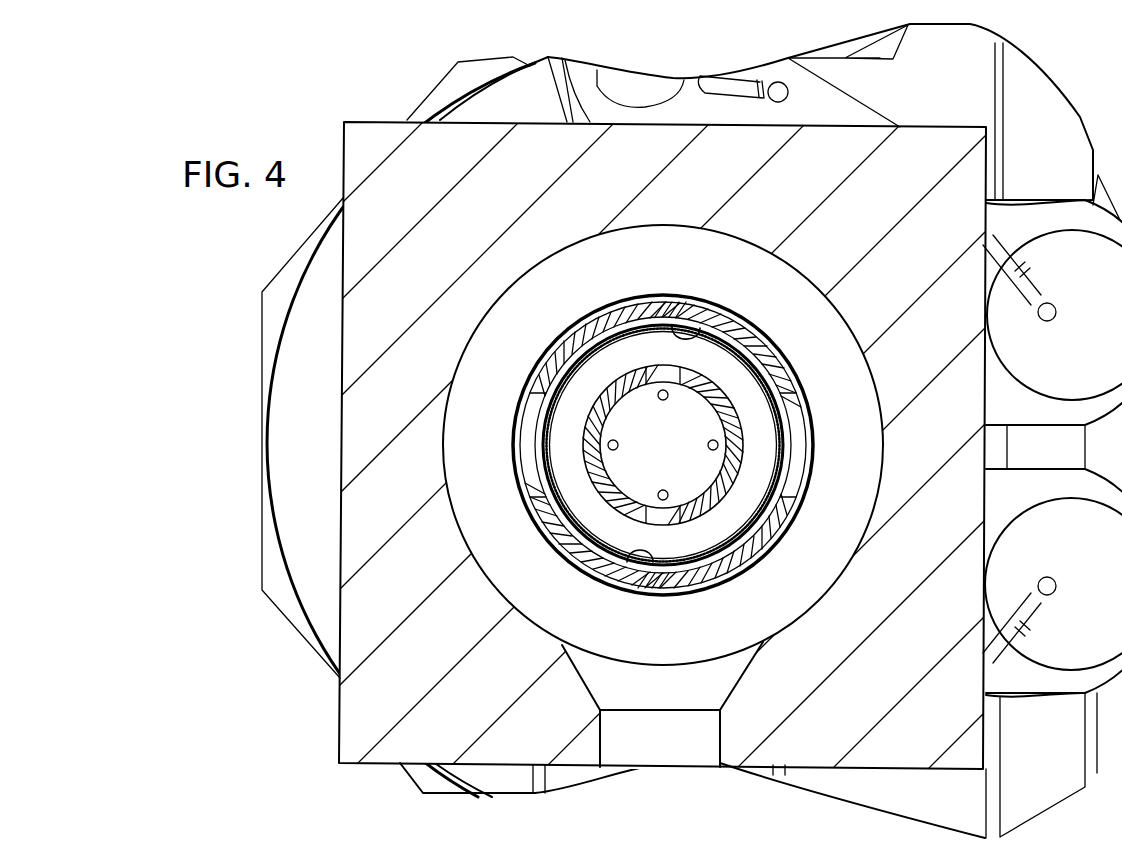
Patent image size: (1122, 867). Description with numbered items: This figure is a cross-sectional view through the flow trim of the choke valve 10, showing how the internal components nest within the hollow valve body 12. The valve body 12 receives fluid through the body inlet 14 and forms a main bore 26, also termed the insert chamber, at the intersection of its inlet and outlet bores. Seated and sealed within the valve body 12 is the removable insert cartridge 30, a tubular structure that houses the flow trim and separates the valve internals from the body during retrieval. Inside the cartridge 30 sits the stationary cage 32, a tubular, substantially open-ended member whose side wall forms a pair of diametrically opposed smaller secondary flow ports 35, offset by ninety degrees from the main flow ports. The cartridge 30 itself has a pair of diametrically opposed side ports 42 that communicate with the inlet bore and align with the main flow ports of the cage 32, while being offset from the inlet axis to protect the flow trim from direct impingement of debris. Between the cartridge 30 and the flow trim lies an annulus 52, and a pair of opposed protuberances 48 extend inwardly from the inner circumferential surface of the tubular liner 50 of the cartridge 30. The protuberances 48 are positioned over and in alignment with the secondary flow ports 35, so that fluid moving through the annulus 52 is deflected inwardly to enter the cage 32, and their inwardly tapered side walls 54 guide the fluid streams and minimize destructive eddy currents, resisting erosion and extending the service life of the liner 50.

The choke valve 10 is at (398, 83).
The hollow valve body 12 is at (865, 124).
The body inlet 14 is at (627, 688).
The main bore 26 is at (600, 288).
The insert cartridge 30 is at (766, 326).
The stationary cage 32 is at (742, 470).
The secondary flow ports 35 is at (650, 512).
The side ports 42 is at (515, 445).
The protuberances 48 is at (672, 298).
The tubular liner 50 is at (597, 347).
The annulus 52 is at (740, 381).
The inwardly tapered side walls 54 is at (710, 323).